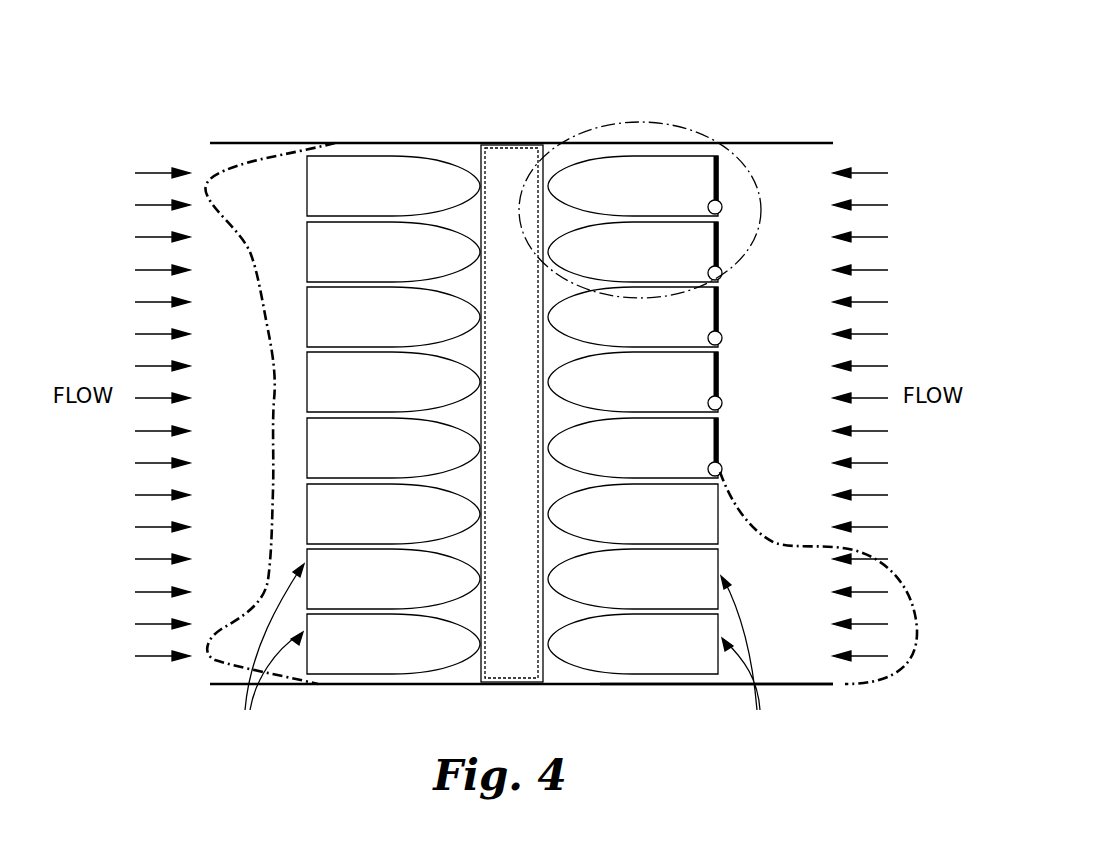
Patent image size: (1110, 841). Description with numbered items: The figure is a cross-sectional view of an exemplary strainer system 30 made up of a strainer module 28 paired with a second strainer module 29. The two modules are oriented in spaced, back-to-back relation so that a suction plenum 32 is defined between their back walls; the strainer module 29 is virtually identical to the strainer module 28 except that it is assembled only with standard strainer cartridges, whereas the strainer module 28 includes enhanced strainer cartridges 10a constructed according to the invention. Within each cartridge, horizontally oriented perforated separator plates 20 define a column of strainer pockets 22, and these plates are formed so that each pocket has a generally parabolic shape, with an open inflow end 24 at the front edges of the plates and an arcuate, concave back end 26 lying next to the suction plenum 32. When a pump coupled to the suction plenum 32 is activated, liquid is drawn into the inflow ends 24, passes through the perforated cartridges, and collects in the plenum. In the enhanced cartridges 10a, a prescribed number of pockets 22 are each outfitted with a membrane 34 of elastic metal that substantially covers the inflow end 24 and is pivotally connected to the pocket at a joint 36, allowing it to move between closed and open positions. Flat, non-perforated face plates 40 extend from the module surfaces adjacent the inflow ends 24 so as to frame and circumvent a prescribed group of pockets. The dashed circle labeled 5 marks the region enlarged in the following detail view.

The strainer system 30 is at (335, 120).
The enhanced strainer cartridge 10a is at (549, 385).
The separator plate 20 is at (427, 213).
The suction plenum 32 is at (506, 159).
The detail region of FIG. 5 is at (648, 122).
The face plate 40 is at (221, 143).
The joint 36 is at (722, 337).
The membrane 34 is at (722, 434).
The inflow end 24 is at (500, 651).
The strainer pocket 22 is at (420, 653).
The back end 26 is at (543, 578).
The second strainer module 29 is at (340, 688).
The strainer module 28 is at (676, 690).